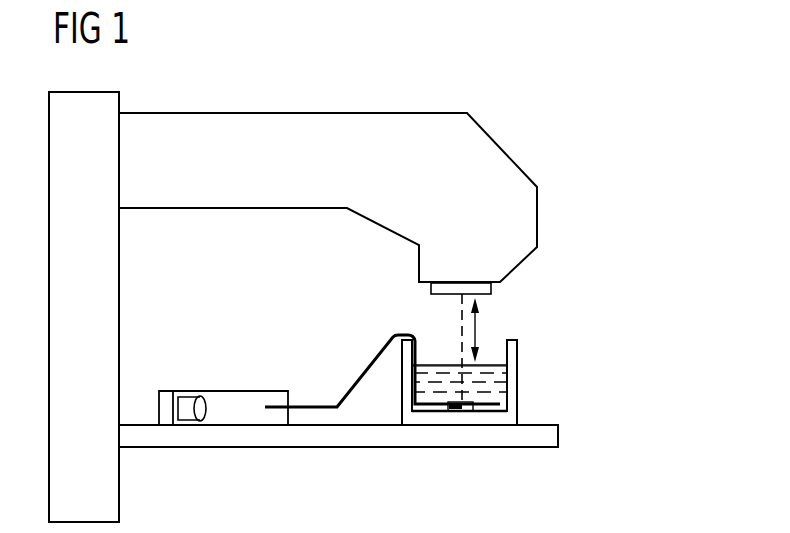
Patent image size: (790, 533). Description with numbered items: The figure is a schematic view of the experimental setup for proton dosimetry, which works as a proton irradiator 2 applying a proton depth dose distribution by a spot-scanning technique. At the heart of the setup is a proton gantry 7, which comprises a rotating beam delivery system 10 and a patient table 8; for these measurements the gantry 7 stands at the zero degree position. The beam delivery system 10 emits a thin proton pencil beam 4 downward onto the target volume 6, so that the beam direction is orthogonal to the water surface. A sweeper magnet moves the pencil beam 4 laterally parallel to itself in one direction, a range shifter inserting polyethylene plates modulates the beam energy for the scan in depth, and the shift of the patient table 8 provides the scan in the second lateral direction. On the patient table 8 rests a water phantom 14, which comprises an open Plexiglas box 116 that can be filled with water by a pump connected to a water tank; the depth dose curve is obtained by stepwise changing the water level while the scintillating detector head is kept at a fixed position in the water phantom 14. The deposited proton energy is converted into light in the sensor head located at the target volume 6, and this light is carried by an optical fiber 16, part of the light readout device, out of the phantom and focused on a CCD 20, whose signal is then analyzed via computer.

The proton irradiator 2 is at (582, 187).
The proton gantry 7 is at (229, 235).
The rotating beam delivery system 10 is at (512, 262).
The pencil beam 4 is at (460, 323).
The water phantom 14 is at (497, 402).
The open Plexiglas box 116 is at (512, 368).
The target volume 6 is at (467, 422).
The patient table 8 is at (340, 435).
The optical fiber 16 is at (363, 370).
The CCD 20 is at (190, 400).